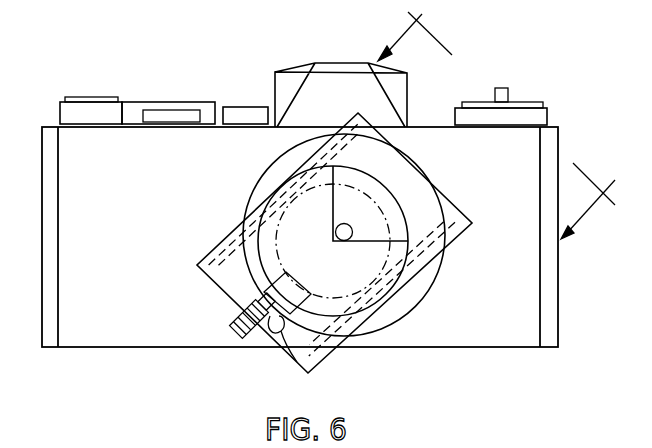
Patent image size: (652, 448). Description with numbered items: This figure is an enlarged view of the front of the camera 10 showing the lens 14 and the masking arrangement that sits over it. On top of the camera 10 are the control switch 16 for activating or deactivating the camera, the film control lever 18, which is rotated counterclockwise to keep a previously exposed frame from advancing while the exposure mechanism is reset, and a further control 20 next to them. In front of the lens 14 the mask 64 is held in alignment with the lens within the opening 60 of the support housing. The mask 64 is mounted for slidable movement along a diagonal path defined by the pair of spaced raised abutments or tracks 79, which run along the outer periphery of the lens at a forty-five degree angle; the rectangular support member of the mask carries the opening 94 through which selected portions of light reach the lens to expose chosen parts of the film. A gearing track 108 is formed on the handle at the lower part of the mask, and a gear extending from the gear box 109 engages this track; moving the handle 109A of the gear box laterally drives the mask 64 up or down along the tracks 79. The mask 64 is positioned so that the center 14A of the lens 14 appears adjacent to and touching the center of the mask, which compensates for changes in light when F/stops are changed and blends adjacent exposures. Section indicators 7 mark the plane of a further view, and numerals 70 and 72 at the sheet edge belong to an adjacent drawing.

The camera 10 is at (566, 313).
The lens 14 is at (284, 212).
The center of the lens 14A is at (352, 230).
The control switch 16 is at (175, 117).
The film control lever 18 is at (90, 107).
The control button 20 is at (252, 107).
The opening 60 is at (258, 175).
The mask 64 is at (458, 190).
The tracks 79 is at (229, 258).
The opening 94 is at (465, 280).
The gearing track 108 is at (242, 322).
The gear box 109 is at (292, 288).
The handle 109A is at (283, 350).
The section line for FIG. 7 is at (496, 125).
The element of adjacent figure 70 is at (402, 447).
The element of adjacent figure 72 is at (435, 447).